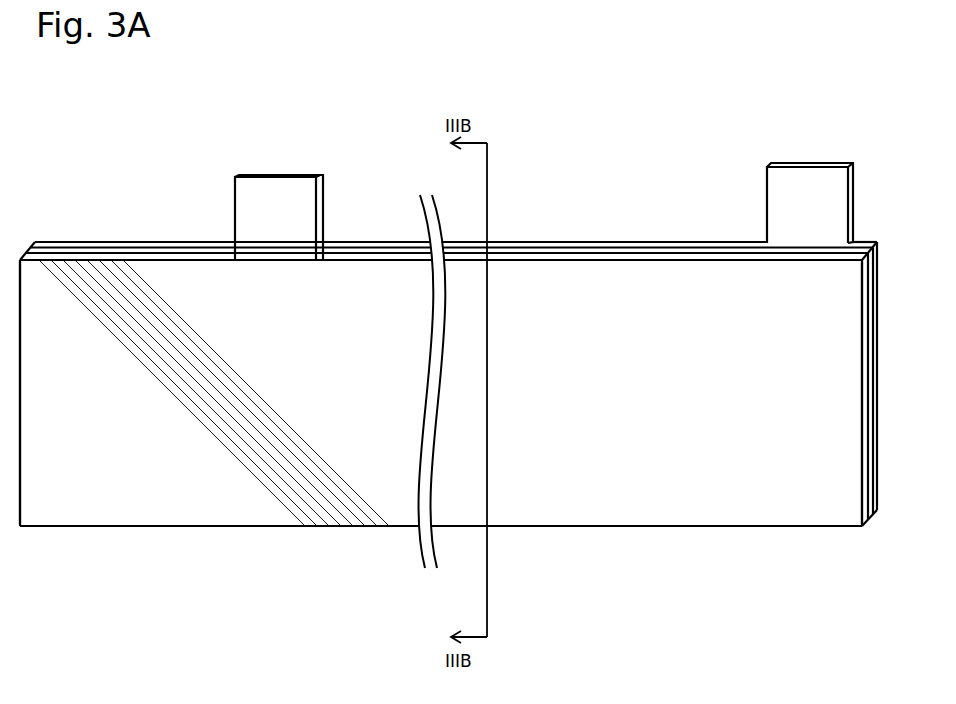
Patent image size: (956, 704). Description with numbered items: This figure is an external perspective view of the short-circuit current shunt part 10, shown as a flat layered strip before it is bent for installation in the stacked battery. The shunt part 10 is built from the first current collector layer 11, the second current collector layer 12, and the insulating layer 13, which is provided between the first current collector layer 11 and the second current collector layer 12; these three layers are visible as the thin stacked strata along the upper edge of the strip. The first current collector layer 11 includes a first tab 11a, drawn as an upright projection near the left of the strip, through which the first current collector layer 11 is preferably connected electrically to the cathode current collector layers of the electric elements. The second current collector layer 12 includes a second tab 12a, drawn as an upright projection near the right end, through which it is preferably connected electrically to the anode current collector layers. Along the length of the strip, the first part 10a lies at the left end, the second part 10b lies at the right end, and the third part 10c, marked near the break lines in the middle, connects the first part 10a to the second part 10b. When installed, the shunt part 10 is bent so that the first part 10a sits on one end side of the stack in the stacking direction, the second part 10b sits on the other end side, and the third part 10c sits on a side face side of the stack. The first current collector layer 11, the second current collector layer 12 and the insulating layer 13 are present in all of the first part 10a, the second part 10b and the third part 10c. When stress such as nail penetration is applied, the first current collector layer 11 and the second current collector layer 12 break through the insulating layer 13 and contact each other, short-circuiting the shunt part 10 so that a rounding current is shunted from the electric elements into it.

The short-circuit current shunt part 10 is at (463, 55).
The first part 10a is at (168, 542).
The second part 10b is at (718, 542).
The third part 10c is at (403, 542).
The first current collector layer 11 is at (676, 258).
The first tab 11a is at (281, 192).
The second current collector layer 12 is at (616, 246).
The second tab 12a is at (809, 182).
The insulating layer 13 is at (642, 252).